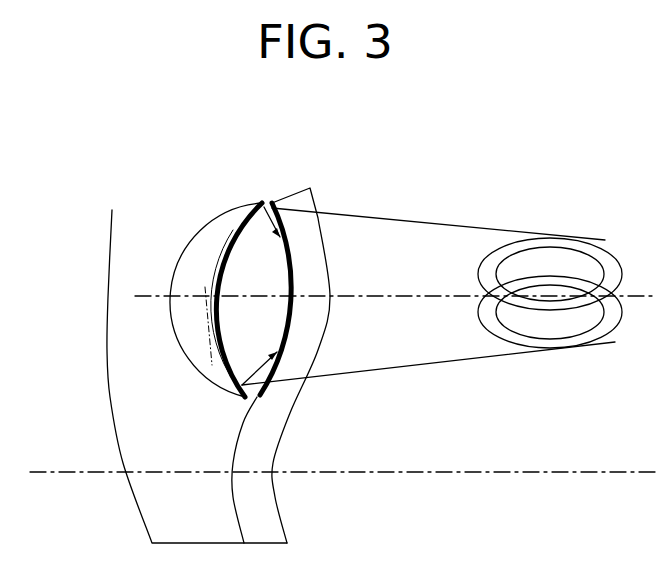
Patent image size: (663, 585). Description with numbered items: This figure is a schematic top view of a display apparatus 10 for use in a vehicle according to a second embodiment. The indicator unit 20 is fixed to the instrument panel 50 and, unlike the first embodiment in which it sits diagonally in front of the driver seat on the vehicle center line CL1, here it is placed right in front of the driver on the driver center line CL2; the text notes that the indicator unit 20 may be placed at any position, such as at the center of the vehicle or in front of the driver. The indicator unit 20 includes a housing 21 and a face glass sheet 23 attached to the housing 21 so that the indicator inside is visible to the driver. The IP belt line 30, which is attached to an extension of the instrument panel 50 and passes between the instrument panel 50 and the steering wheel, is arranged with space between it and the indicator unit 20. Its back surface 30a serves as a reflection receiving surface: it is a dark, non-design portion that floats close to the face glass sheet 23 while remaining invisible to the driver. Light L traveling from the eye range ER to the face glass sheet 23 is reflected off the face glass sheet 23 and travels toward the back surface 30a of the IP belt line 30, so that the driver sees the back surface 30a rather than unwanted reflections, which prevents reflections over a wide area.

The display apparatus 10 is at (413, 143).
The indicator unit 20 is at (210, 250).
The housing 21 is at (178, 267).
The face glass sheet 23 is at (240, 230).
The IP belt line 30 is at (328, 365).
The back surface 30a is at (272, 277).
The instrument panel 50 is at (123, 248).
The light L is at (440, 227).
The eye range ER is at (560, 257).
The vehicle center line CL1 is at (515, 471).
The driver center line CL2 is at (450, 298).